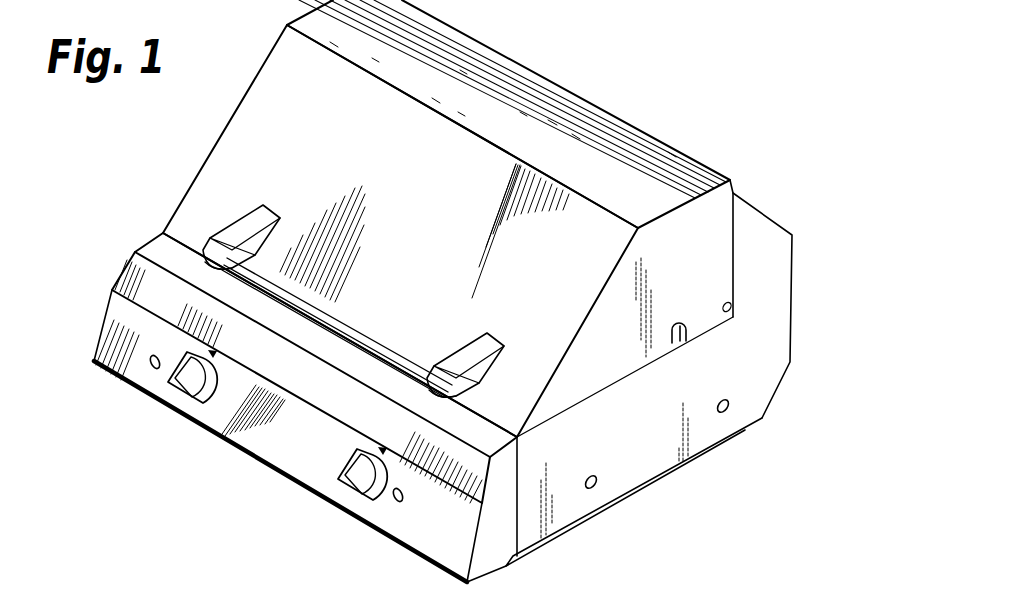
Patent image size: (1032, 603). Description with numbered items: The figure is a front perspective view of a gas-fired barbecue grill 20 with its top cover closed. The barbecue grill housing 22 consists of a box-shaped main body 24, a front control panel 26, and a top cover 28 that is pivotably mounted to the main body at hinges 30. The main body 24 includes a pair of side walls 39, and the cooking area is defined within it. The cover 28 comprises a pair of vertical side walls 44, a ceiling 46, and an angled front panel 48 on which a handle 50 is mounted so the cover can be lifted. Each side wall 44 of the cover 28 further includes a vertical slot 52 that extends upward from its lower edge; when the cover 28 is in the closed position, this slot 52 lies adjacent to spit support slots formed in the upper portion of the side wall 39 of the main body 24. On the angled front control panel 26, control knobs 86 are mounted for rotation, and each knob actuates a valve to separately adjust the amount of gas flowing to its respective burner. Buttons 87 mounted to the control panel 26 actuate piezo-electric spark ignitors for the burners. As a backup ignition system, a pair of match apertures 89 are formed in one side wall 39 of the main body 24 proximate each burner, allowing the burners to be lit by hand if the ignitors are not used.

The gas-fired barbecue grill 20 is at (682, 40).
The barbecue grill housing 22 is at (640, 497).
The main body 24 is at (776, 394).
The front control panel 26 is at (113, 362).
The top cover 28 is at (513, 56).
The hinges 30 is at (733, 318).
The side walls 39 is at (700, 430).
The vertical side walls 44 is at (712, 217).
The ceiling 46 is at (652, 152).
The angled front panel 48 is at (272, 54).
The handle 50 is at (225, 225).
The vertical slot 52 is at (687, 327).
The control knobs 86 is at (164, 381).
The buttons 87 is at (177, 421).
The match apertures 89 is at (594, 490).